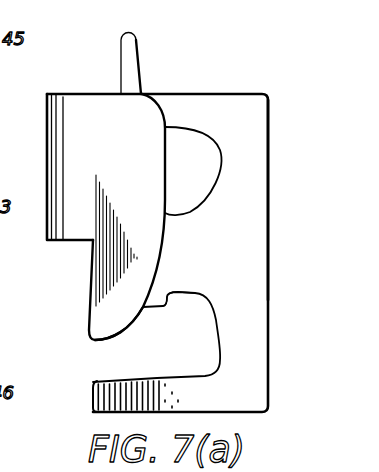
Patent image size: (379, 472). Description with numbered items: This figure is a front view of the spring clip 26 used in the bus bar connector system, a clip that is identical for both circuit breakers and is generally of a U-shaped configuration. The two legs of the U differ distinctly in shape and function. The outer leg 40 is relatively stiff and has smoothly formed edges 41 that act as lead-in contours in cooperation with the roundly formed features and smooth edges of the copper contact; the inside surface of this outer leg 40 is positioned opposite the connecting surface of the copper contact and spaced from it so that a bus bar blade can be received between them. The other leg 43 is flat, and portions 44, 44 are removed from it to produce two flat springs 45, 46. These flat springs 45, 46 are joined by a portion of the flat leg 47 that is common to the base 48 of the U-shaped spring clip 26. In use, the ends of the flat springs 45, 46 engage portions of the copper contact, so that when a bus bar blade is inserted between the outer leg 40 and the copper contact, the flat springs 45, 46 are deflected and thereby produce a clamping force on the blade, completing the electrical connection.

The spring clip 26 is at (236, 54).
The outer leg 40 is at (97, 108).
The smoothly formed edges 41 is at (115, 322).
The other leg 43 is at (252, 99).
The removed portions 44 is at (200, 174).
The flat spring 45 is at (141, 52).
The flat spring 46 is at (93, 399).
The portion of the flat leg 47 is at (187, 255).
The base 48 is at (63, 158).